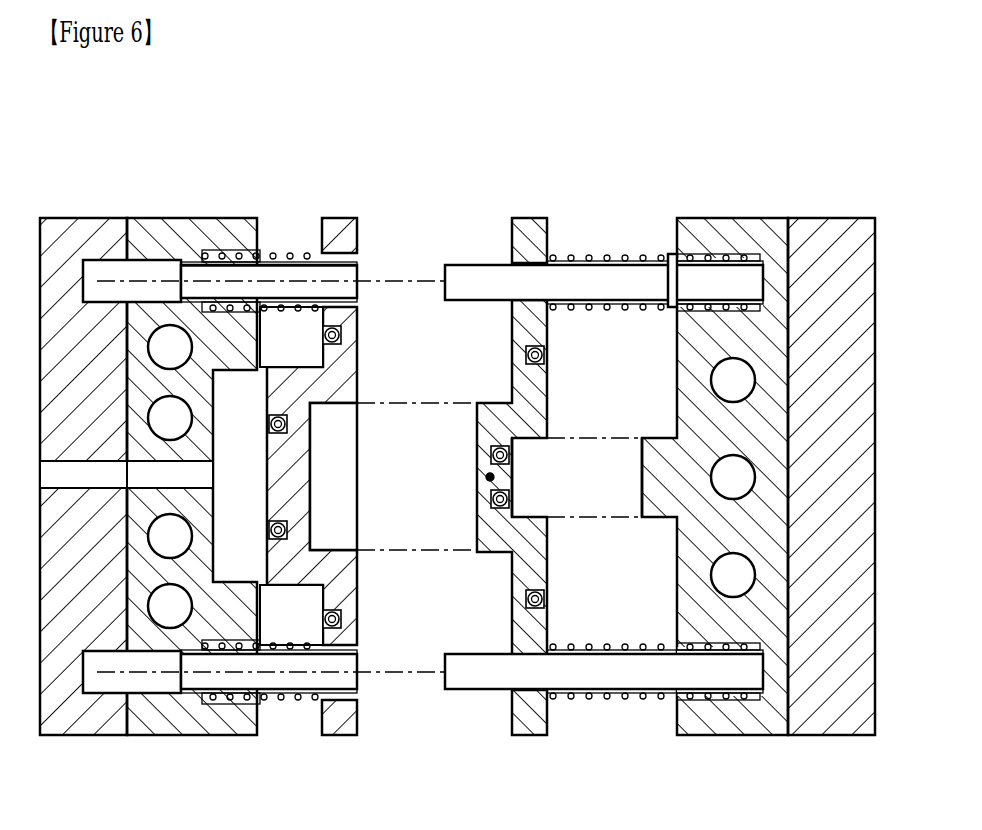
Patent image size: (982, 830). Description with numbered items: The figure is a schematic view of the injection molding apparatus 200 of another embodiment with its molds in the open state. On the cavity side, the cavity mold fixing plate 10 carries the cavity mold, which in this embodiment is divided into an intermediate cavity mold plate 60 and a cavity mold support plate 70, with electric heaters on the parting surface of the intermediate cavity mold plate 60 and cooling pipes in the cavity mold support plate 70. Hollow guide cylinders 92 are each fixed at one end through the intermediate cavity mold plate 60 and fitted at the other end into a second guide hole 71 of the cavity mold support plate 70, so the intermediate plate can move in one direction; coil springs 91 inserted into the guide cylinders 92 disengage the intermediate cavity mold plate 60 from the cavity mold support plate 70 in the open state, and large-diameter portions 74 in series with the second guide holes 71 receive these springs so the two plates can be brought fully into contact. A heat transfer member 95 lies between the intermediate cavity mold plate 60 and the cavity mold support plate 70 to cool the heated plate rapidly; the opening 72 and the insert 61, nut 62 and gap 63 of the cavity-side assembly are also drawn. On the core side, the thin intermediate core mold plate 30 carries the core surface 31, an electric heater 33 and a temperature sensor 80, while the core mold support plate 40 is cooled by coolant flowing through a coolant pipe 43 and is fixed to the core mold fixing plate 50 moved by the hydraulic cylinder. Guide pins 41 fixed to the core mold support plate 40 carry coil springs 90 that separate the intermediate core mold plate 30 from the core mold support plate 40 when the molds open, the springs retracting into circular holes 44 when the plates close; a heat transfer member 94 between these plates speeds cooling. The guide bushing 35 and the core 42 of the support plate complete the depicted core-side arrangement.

The mold assembly 200 is at (122, 148).
The cavity mold fixing plate 10 is at (72, 735).
The intermediate core mold plate 30 is at (527, 736).
The core surface 31 is at (477, 518).
The electric heater 33 is at (514, 496).
The guide bushing 35 is at (510, 306).
The core mold support plate 40 is at (730, 736).
The guide pin 41 is at (488, 264).
The core 42 is at (638, 470).
The coolant pipe 43 is at (718, 372).
The circular hole 44 is at (720, 256).
The core mold fixing plate 50 is at (822, 736).
The intermediate cavity mold plate 60 is at (340, 737).
The insert 61 is at (311, 471).
The nut 62 is at (352, 300).
The gap 63 is at (272, 372).
The cavity mold support plate 70 is at (170, 735).
The second guide hole 71 is at (155, 268).
The shaft 72 is at (215, 476).
The large-diameter portion 74 is at (226, 260).
The temperature sensor 80 is at (487, 476).
The coil spring 90 is at (620, 256).
The coil spring 91 is at (280, 702).
The hollow guide cylinder 92 is at (299, 702).
The heat transfer member 94 is at (675, 232).
The heat transfer member 95 is at (278, 252).